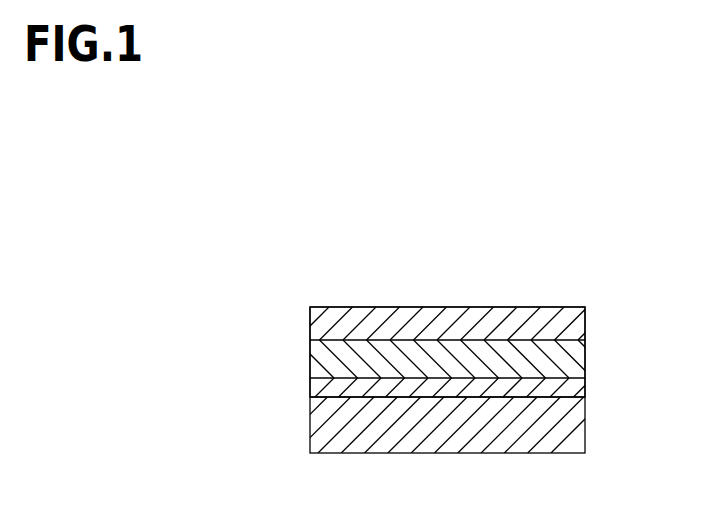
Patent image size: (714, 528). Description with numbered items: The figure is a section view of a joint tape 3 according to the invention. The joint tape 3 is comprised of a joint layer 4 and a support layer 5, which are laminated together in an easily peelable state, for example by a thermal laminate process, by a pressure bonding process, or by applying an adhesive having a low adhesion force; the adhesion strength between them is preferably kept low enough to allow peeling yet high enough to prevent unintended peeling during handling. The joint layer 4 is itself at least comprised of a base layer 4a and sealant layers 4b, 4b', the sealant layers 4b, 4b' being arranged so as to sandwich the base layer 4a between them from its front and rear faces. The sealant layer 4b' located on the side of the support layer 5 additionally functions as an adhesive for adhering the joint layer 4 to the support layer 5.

The joint tape 3 is at (576, 282).
The joint layer 4 is at (586, 306).
The base layer 4a is at (338, 358).
The sealant layer 4b is at (435, 323).
The sealant layer 4b' is at (425, 388).
The support layer 5 is at (338, 423).